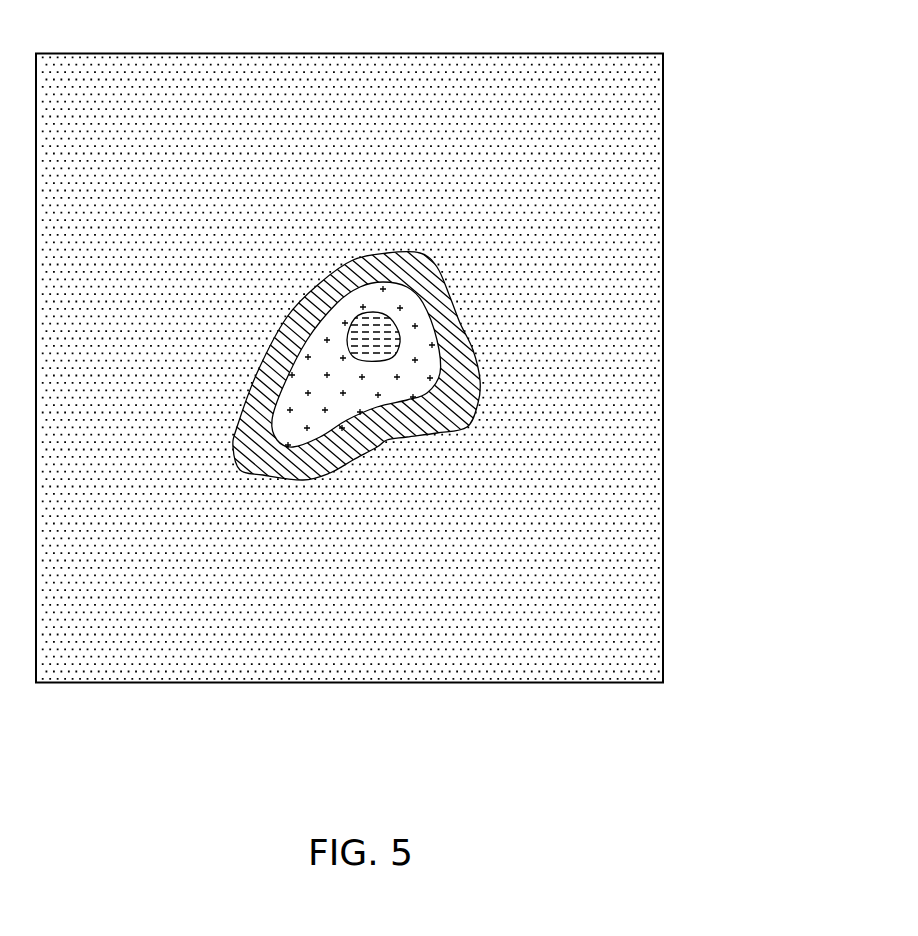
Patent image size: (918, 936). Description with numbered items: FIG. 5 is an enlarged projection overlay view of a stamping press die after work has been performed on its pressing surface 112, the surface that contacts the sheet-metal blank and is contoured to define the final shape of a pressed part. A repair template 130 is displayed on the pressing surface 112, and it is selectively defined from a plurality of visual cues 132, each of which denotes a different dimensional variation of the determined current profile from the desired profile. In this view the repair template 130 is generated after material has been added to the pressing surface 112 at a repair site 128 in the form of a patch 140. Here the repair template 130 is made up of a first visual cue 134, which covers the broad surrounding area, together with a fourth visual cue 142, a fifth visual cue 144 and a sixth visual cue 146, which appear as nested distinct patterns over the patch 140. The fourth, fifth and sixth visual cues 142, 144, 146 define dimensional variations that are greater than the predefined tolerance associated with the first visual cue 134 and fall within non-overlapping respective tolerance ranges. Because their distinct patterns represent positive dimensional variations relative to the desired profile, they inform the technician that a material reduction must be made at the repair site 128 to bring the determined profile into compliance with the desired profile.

The pressing surface 112 is at (322, 50).
The repair template 130 is at (413, 344).
The visual cues 132 is at (413, 368).
The first visual cue 134 is at (632, 643).
The repair site 128 is at (419, 332).
The patch 140 is at (419, 332).
The fourth visual cue 142 is at (437, 293).
The fifth visual cue 144 is at (410, 357).
The sixth visual cue 146 is at (372, 345).